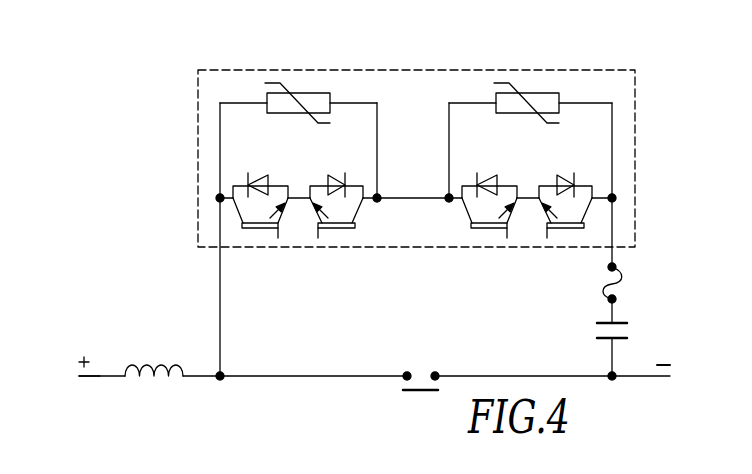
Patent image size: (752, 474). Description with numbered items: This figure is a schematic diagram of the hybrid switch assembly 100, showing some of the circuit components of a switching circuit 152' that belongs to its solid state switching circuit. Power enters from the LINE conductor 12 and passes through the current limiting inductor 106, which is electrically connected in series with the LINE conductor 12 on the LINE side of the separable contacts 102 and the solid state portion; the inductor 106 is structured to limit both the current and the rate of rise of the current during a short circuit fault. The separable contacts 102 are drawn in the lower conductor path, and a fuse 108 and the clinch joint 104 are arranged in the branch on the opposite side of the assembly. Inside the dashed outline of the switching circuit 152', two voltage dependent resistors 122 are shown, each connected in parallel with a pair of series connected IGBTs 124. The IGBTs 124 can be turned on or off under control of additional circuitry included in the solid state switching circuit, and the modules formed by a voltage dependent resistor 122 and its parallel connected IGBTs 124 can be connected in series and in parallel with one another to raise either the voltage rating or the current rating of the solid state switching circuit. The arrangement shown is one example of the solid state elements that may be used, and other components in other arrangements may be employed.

The hybrid switch assembly 100 is at (712, 73).
The separable contacts 102 is at (430, 352).
The clinch joint 104 is at (632, 337).
The current limiting inductor 106 is at (158, 364).
The fuse 108 is at (620, 281).
The LINE conductor 12 is at (100, 376).
The voltage dependent resistor 122 is at (307, 93).
The IGBT 124 is at (333, 172).
The switching circuit 152' is at (405, 132).